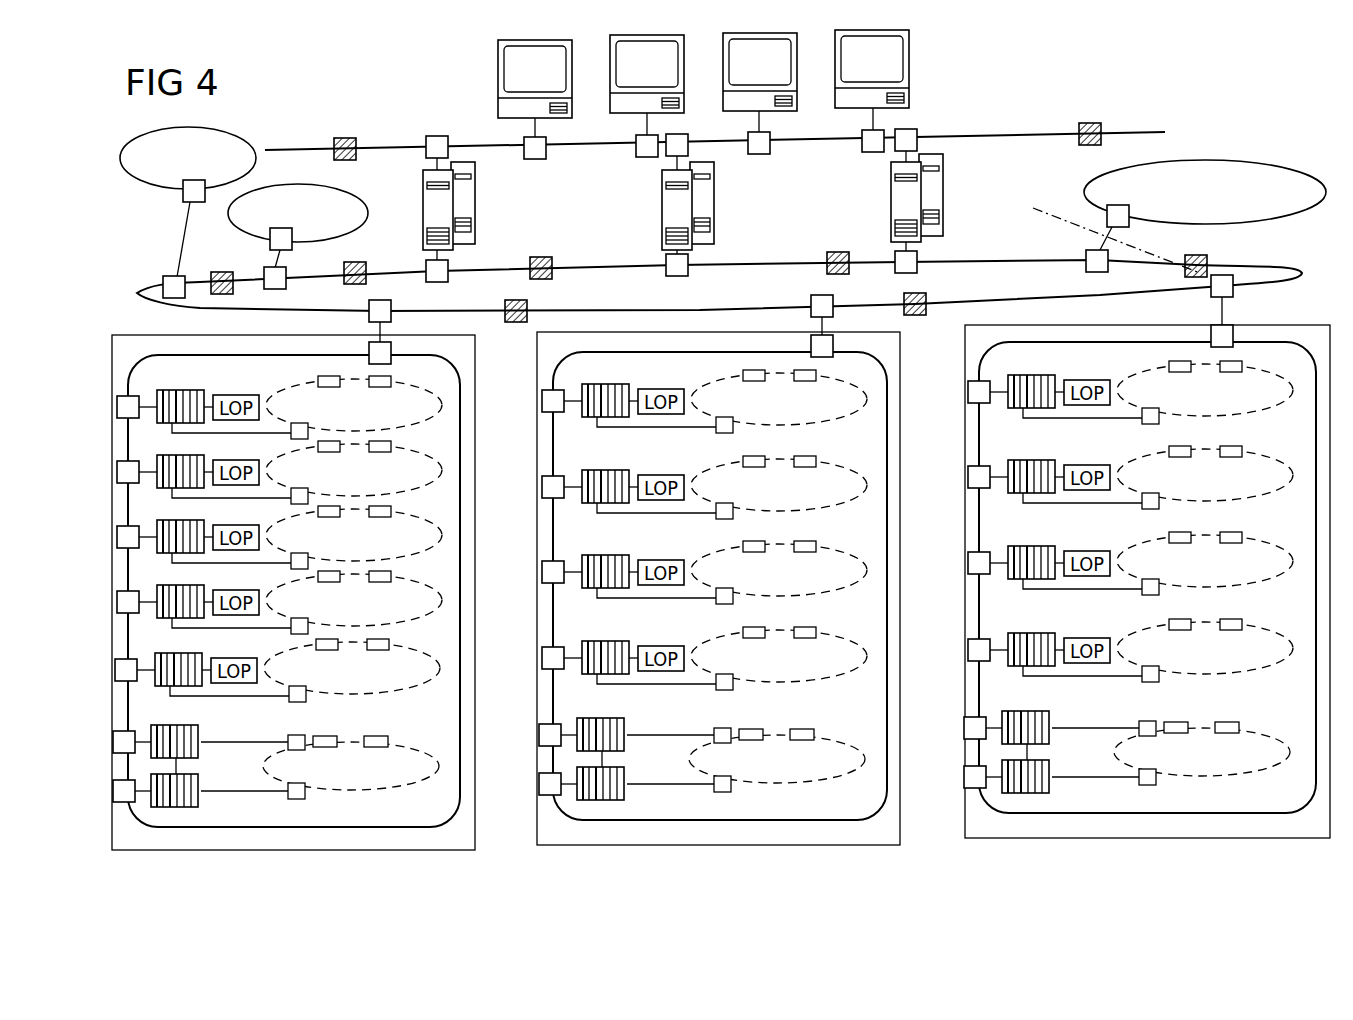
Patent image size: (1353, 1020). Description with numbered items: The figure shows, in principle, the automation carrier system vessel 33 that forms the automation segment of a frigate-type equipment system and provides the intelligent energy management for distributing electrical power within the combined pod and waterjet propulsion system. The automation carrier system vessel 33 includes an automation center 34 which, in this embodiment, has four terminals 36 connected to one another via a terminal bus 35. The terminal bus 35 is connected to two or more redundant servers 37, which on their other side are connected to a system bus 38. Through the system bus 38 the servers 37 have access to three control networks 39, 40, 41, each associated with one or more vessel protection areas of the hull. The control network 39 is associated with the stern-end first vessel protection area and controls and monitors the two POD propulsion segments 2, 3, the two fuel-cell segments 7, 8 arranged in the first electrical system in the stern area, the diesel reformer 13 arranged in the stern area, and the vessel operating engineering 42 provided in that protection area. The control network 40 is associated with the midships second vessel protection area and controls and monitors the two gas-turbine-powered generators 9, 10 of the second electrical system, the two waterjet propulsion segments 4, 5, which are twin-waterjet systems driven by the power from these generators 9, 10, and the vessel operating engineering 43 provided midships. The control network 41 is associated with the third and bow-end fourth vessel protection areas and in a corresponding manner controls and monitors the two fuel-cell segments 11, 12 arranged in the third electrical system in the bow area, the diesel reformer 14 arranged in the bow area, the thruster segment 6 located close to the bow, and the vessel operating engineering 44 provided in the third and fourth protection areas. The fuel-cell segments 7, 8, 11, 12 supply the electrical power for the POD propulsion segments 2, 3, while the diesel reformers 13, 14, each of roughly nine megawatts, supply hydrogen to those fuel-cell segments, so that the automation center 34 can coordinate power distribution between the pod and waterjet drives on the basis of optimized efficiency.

The POD propulsion segment 2 is at (170, 388).
The POD propulsion segment 3 is at (170, 453).
The waterjet propulsion segment 4 is at (597, 557).
The waterjet propulsion segment 5 is at (597, 642).
The thruster segment 6 is at (1022, 633).
The fuel cell segment 7 is at (170, 518).
The fuel cell segment 8 is at (170, 583).
The generator 9 is at (597, 382).
The generator 10 is at (597, 467).
The fuel cell segment 11 is at (1022, 373).
The fuel cell segment 12 is at (1022, 458).
The diesel reformer 13 is at (167, 652).
The diesel reformer 14 is at (1022, 545).
The automation carrier system vessel 33 is at (1212, 110).
The automation center 34 is at (471, 93).
The terminal bus 35 is at (1030, 135).
The terminal 36 is at (893, 77).
The redundant server 37 is at (706, 205).
The system bus 38 is at (613, 262).
The control network 39 is at (152, 355).
The control network 40 is at (548, 695).
The control network 41 is at (1290, 338).
The vessel operating engineering 42 is at (150, 785).
The vessel operating engineering 43 is at (580, 777).
The vessel operating engineering 44 is at (1007, 770).